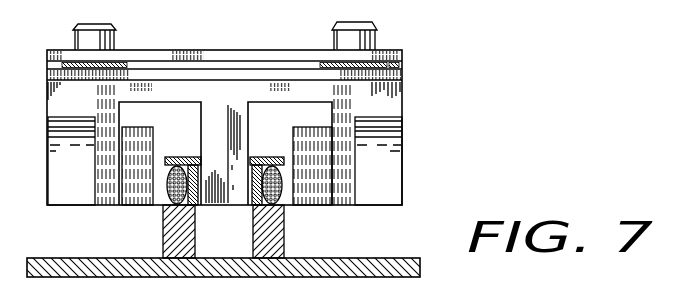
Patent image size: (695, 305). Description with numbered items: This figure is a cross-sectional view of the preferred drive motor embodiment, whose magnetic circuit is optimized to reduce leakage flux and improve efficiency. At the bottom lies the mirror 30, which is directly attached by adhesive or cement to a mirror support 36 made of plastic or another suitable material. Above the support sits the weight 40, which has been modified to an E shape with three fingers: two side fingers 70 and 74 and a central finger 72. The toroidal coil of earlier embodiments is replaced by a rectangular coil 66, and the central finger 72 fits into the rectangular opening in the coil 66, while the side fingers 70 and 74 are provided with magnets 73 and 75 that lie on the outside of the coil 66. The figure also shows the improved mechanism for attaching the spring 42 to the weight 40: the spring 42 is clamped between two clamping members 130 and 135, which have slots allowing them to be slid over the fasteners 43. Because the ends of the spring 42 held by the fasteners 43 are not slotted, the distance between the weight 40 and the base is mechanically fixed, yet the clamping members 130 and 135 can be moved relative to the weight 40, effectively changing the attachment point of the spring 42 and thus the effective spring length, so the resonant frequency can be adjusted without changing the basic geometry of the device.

The mirror 30 is at (390, 257).
The mirror support 36 is at (283, 239).
The weight 40 is at (380, 162).
The spring 42 is at (403, 64).
The fasteners 43 is at (118, 35).
The rectangular coil 66 is at (270, 157).
The side finger 70 is at (102, 208).
The central finger 72 is at (227, 208).
The magnet 73 is at (137, 208).
The side finger 74 is at (347, 205).
The magnet 75 is at (310, 127).
The clamping member 130 is at (238, 50).
The clamping member 135 is at (401, 78).